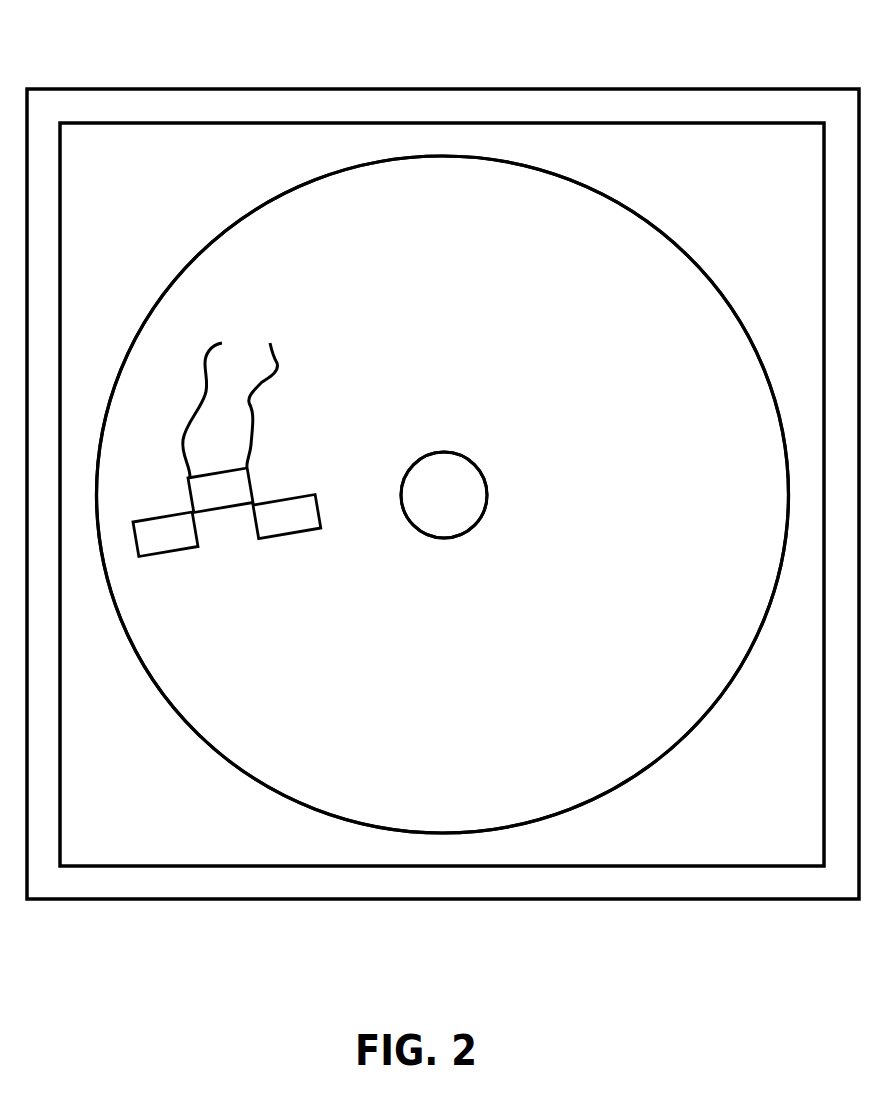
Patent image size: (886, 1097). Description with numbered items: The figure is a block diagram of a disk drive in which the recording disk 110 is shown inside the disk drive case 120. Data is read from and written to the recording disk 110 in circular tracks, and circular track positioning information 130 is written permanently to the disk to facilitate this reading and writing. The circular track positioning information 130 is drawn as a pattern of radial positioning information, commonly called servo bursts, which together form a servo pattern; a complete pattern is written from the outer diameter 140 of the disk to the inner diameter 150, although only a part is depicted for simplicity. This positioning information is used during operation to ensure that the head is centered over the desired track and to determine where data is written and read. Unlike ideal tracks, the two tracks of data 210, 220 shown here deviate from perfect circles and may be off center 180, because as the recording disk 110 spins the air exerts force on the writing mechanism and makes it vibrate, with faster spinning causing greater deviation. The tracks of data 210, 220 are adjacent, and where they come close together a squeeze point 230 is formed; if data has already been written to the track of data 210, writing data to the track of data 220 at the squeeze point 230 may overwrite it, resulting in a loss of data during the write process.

The disk drive case 120 is at (182, 107).
The recording disk 110 is at (643, 583).
The outer diameter 140 is at (444, 157).
The inner diameter 150 is at (476, 463).
The center 180 is at (462, 506).
The track of data 210 is at (203, 372).
The track of data 220 is at (277, 363).
The squeeze point 230 is at (250, 405).
The circular track positioning information 130 is at (333, 547).